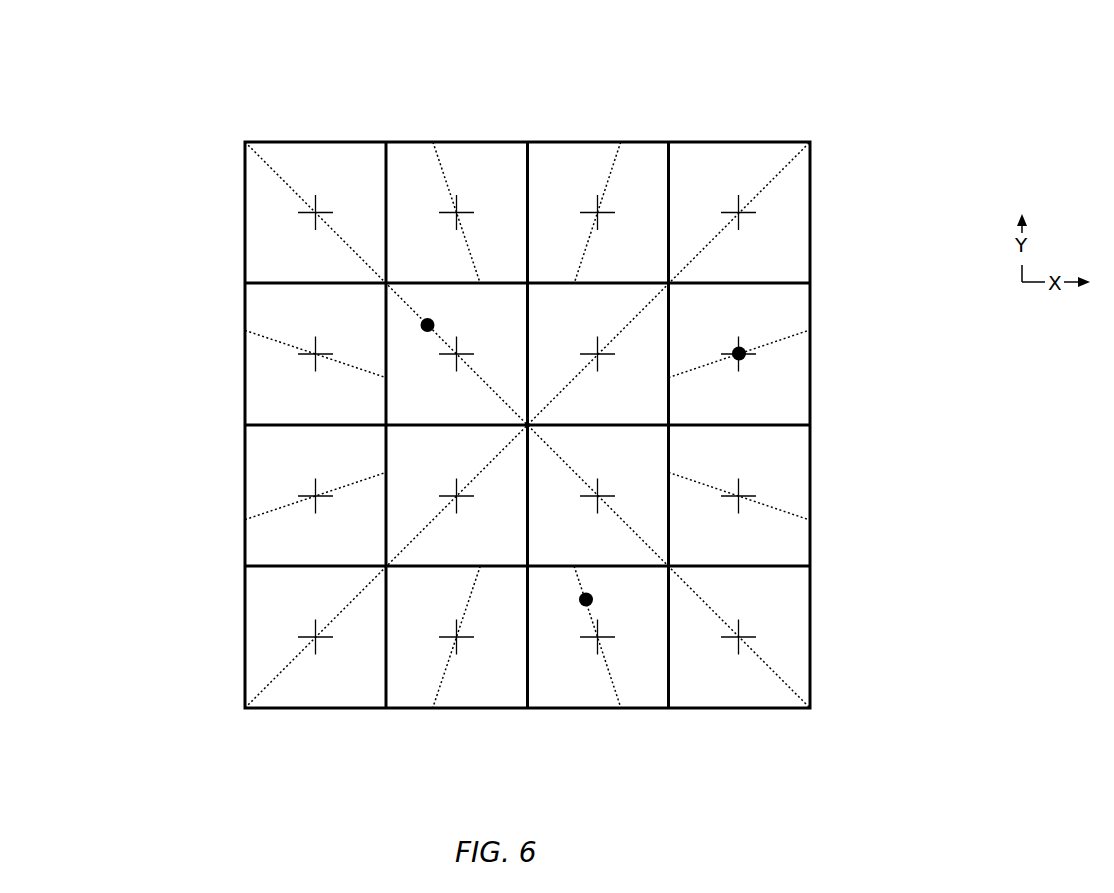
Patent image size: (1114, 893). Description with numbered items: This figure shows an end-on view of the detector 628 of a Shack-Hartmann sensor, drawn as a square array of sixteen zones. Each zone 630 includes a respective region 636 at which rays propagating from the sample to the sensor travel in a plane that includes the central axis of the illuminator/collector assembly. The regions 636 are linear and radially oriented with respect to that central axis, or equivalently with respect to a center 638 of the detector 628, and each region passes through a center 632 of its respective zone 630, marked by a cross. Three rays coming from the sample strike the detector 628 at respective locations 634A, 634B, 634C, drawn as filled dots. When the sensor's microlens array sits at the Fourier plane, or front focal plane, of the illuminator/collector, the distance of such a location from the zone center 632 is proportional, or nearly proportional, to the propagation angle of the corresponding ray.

The detector 628 is at (104, 86).
The zone 630 is at (777, 654).
The center of the respective zone 632 is at (743, 635).
The location 634A is at (580, 595).
The location 634B is at (735, 350).
The location 634C is at (434, 323).
The region 636 is at (442, 168).
The center of the detector 638 is at (533, 420).